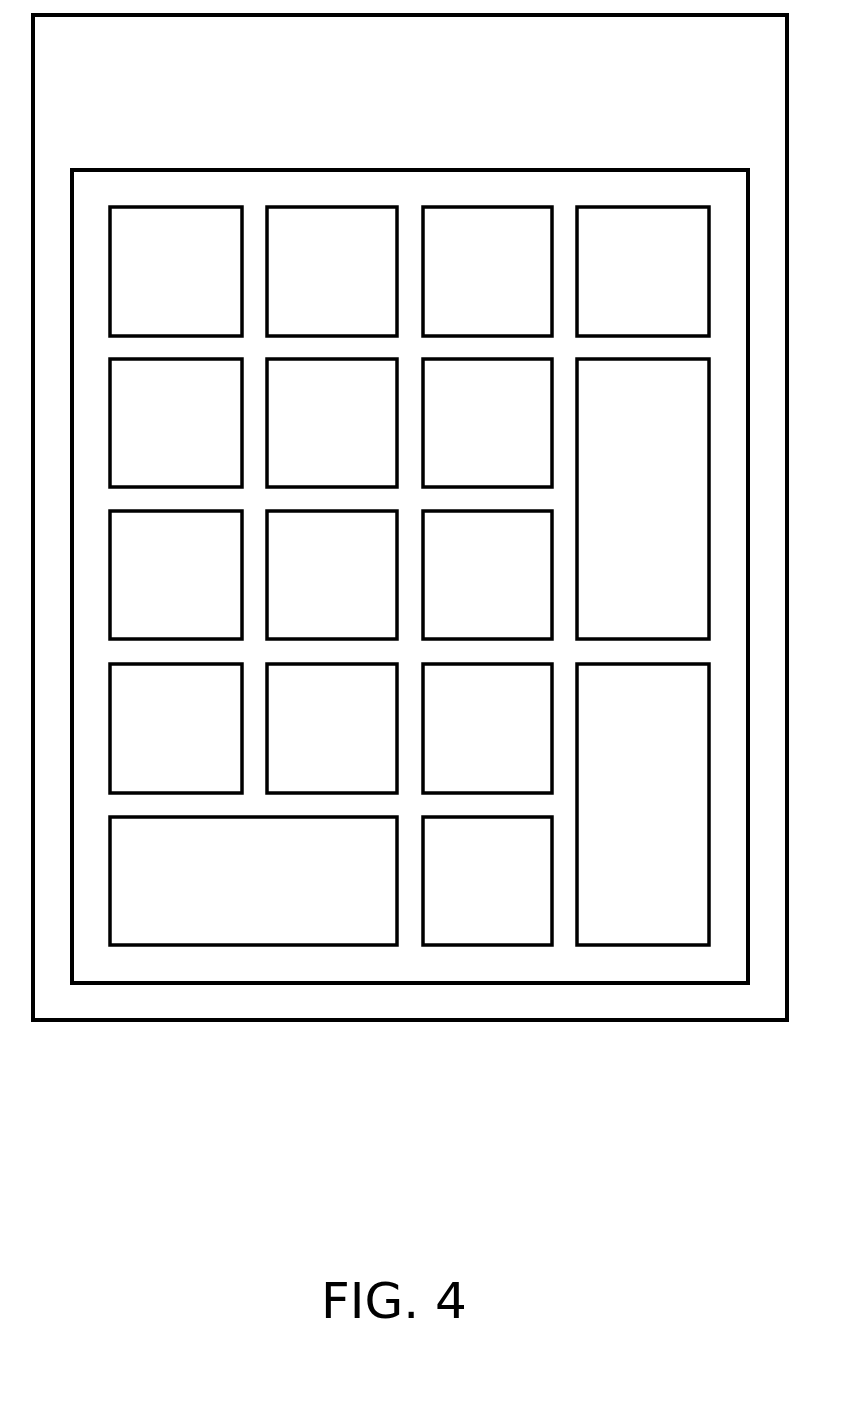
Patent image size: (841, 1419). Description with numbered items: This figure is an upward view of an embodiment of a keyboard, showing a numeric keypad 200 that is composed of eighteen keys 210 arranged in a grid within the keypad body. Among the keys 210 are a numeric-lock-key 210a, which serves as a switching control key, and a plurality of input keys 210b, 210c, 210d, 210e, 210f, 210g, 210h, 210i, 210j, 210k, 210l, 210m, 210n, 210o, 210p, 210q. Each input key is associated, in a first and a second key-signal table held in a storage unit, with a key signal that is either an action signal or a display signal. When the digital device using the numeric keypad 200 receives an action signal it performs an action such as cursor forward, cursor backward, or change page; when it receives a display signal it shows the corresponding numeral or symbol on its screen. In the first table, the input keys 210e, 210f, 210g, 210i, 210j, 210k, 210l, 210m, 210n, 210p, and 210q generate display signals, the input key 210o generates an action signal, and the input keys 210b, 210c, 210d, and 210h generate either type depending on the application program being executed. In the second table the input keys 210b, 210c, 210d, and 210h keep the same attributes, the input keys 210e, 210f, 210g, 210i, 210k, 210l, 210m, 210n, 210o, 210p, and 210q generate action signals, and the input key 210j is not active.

The numeric keypad 200 is at (177, 1046).
The keys 210 is at (410, 983).
The numeric-lock-key 210a is at (176, 271).
The input key 210b is at (332, 271).
The input key 210c is at (487, 271).
The input key 210d is at (643, 271).
The input key 210e is at (176, 423).
The input key 210f is at (332, 423).
The input key 210g is at (487, 423).
The input key 210h is at (643, 499).
The input key 210i is at (176, 575).
The input key 210j is at (332, 575).
The input key 210k is at (487, 575).
The input key 210l is at (176, 728).
The input key 210m is at (332, 728).
The input key 210n is at (487, 728).
The input key 210o is at (643, 804).
The input key 210p is at (253, 881).
The input key 210q is at (487, 881).